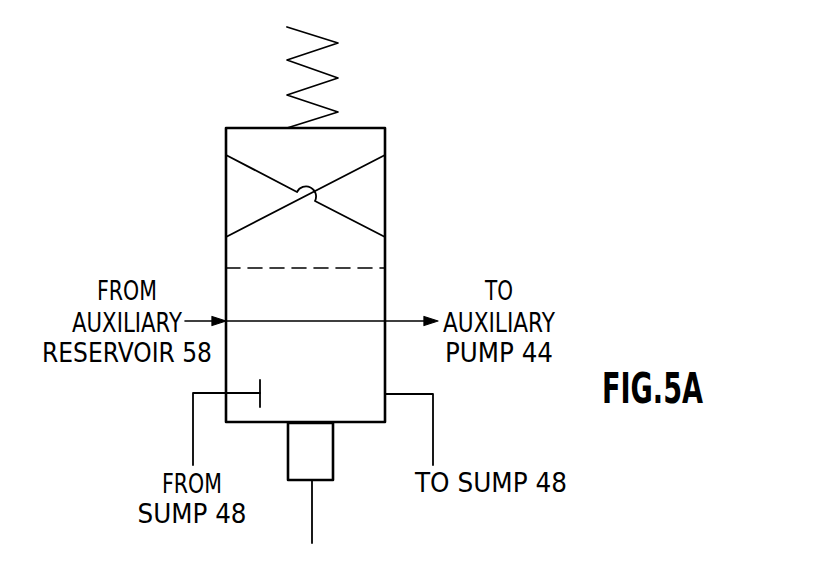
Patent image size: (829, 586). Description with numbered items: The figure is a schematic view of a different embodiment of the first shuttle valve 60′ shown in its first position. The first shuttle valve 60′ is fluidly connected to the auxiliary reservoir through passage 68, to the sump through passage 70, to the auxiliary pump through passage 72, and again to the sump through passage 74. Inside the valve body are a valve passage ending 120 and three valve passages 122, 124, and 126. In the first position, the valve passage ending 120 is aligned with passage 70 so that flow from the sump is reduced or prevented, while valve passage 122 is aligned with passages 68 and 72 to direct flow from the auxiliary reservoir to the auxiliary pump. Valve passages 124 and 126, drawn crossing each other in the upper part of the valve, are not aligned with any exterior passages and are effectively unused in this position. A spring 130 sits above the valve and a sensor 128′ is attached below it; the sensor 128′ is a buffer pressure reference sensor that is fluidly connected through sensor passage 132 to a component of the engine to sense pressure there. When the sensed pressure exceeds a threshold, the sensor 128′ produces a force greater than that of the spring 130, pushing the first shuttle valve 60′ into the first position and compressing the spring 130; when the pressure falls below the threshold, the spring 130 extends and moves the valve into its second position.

The first shuttle valve 60′ is at (226, 116).
The spring 130 is at (340, 41).
The valve passage 126 is at (256, 163).
The valve passage 124 is at (256, 226).
The passage 68 is at (200, 319).
The passage 72 is at (410, 319).
The valve passage 122 is at (323, 319).
The valve passage ending 120 is at (243, 390).
The passage 70 is at (193, 418).
The passage 74 is at (433, 432).
The sensor 128′ is at (333, 460).
The sensor passage 132 is at (312, 507).